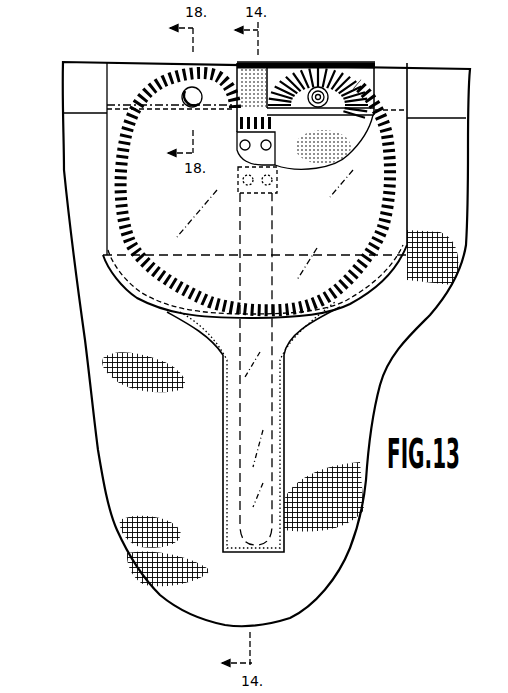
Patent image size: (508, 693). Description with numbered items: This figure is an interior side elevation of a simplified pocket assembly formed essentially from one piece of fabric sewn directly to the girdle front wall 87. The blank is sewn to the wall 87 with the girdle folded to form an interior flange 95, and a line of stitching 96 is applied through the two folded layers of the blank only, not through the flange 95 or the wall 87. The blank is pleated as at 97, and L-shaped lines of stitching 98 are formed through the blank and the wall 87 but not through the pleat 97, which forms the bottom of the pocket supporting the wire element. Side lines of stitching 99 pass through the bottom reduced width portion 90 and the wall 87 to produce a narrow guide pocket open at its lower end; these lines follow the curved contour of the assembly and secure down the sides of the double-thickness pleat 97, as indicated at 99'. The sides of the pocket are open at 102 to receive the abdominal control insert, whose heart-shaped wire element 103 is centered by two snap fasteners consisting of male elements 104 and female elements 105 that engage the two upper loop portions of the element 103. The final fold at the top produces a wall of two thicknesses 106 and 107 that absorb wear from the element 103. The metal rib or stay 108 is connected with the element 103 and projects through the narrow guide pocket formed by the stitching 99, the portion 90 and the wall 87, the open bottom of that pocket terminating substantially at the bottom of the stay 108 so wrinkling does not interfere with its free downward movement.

The girdle front wall 87 is at (418, 312).
The bottom reduced width portion 90 is at (243, 455).
The interior flange 95 is at (440, 92).
The third line of stitching 96 is at (392, 110).
The pleat 97 is at (306, 325).
The L-shaped lines of stitching 98 is at (277, 337).
The side lines of stitching 99 is at (255, 453).
The stitching securing the pleat 99' is at (288, 290).
The open pocket sides 102 is at (417, 180).
The heart-shaped wire element 103 is at (320, 66).
The male snap fastener element 104 is at (328, 100).
The female snap fastener element 105 is at (192, 87).
The first wall thickness 106 is at (287, 63).
The second wall thickness 107 is at (303, 63).
The metal rib or stay 108 is at (255, 191).